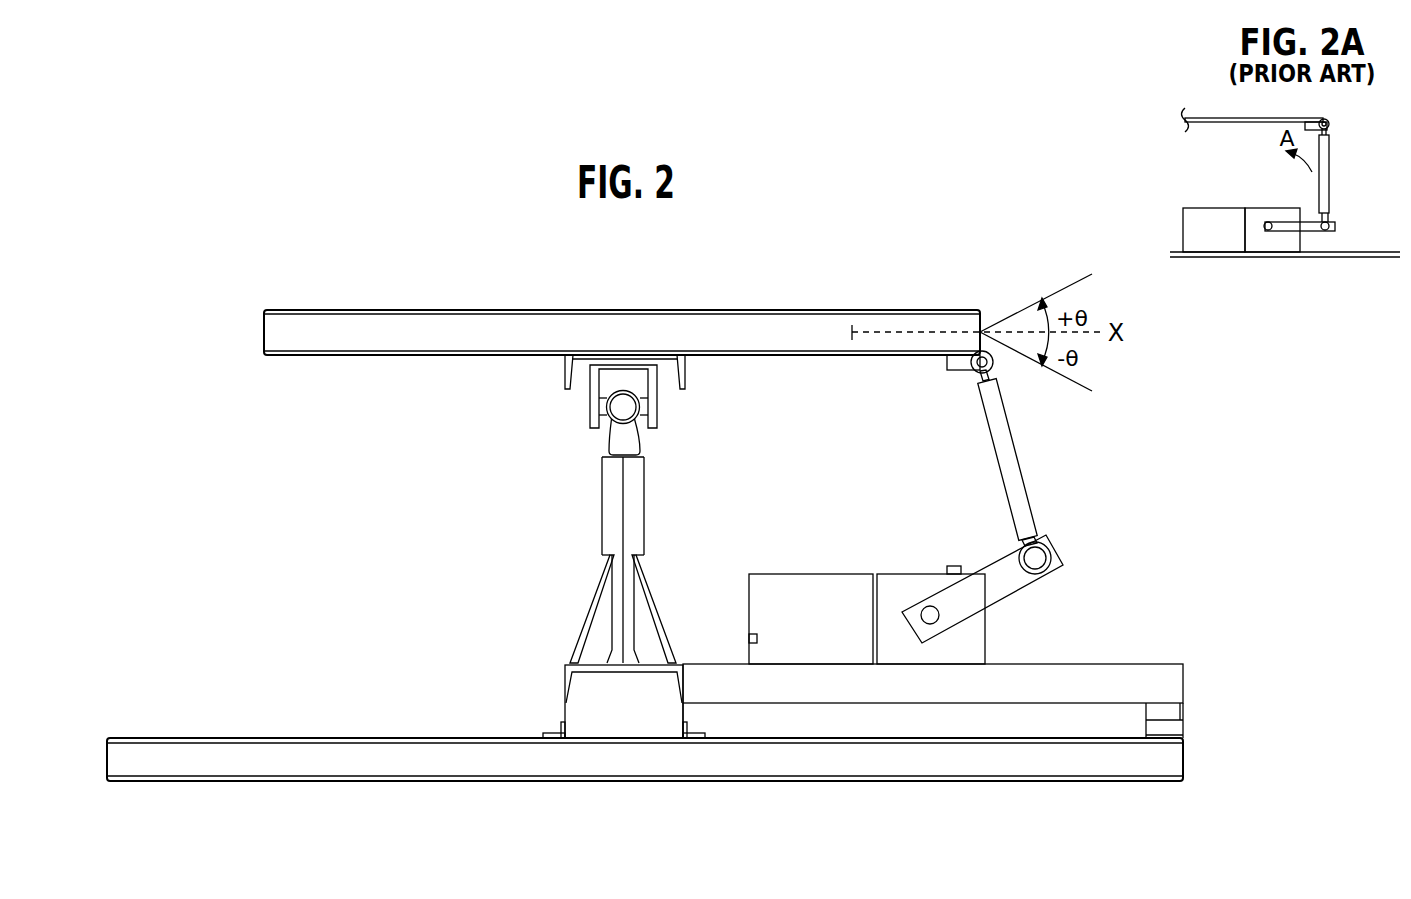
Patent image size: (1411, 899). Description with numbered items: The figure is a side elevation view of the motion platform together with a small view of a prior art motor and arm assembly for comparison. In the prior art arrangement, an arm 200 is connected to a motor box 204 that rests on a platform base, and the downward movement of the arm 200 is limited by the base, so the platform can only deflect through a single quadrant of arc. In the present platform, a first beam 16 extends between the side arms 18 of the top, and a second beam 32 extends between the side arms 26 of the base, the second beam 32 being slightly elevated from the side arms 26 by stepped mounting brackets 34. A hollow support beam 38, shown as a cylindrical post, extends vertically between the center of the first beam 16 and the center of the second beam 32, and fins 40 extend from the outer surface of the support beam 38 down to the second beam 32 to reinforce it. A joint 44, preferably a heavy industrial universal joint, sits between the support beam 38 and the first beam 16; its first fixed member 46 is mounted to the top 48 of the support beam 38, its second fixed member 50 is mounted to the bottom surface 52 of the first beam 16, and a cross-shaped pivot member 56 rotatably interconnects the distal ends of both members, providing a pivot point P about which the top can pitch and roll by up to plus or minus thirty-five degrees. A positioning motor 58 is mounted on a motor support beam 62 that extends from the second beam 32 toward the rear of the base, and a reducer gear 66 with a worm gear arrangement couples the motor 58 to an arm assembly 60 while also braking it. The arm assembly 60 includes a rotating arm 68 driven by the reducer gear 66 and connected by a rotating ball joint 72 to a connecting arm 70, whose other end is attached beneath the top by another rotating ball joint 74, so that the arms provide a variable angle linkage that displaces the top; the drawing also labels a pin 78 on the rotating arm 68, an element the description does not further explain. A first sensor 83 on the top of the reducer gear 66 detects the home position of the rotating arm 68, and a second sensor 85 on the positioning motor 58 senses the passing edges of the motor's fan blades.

In FIG. 2, the side arm 18 is at (758, 327).
In FIG. 2, the first beam 16 is at (684, 367).
In FIG. 2, the bottom surface 52 is at (567, 370).
In FIG. 2, the second fixed member 50 is at (664, 377).
In FIG. 2, the pivot point p is at (623, 405).
In FIG. 2, the joint 44 is at (676, 409).
In FIG. 2, the cross-shaped pivot member 56 is at (600, 405).
In FIG. 2, the first fixed member 46 is at (628, 442).
In FIG. 2, the top 48 is at (602, 456).
In FIG. 2, the support beam 38 is at (611, 516).
In FIG. 2, the fin 40 is at (597, 637).
In FIG. 2, the second beam 32 is at (564, 683).
In FIG. 2, the stepped mounting bracket 34 is at (596, 728).
In FIG. 2, the side arm 26 is at (415, 770).
In FIG. 2, the motor support beam 62 is at (1087, 677).
In FIG. 2, the positioning motor 58 is at (818, 608).
In FIG. 2, the second sensor 85 is at (748, 638).
In FIG. 2, the reducer gear 66 is at (885, 608).
In FIG. 2, the first sensor 83 is at (958, 565).
In FIG. 2, the rotating ball joint 72 is at (1074, 554).
In FIG. 2, the rotating arm 68 is at (955, 602).
In FIG. 2, the pivot pin 78 is at (929, 626).
In FIG. 2, the arm assembly 60 is at (1048, 458).
In FIG. 2, the connecting arm 70 is at (1005, 450).
In FIG. 2, the rotating ball joint 74 is at (960, 389).
In FIG. 2A, the motor box 204 is at (1256, 208).
In FIG. 2A, the arm 200 is at (1313, 232).